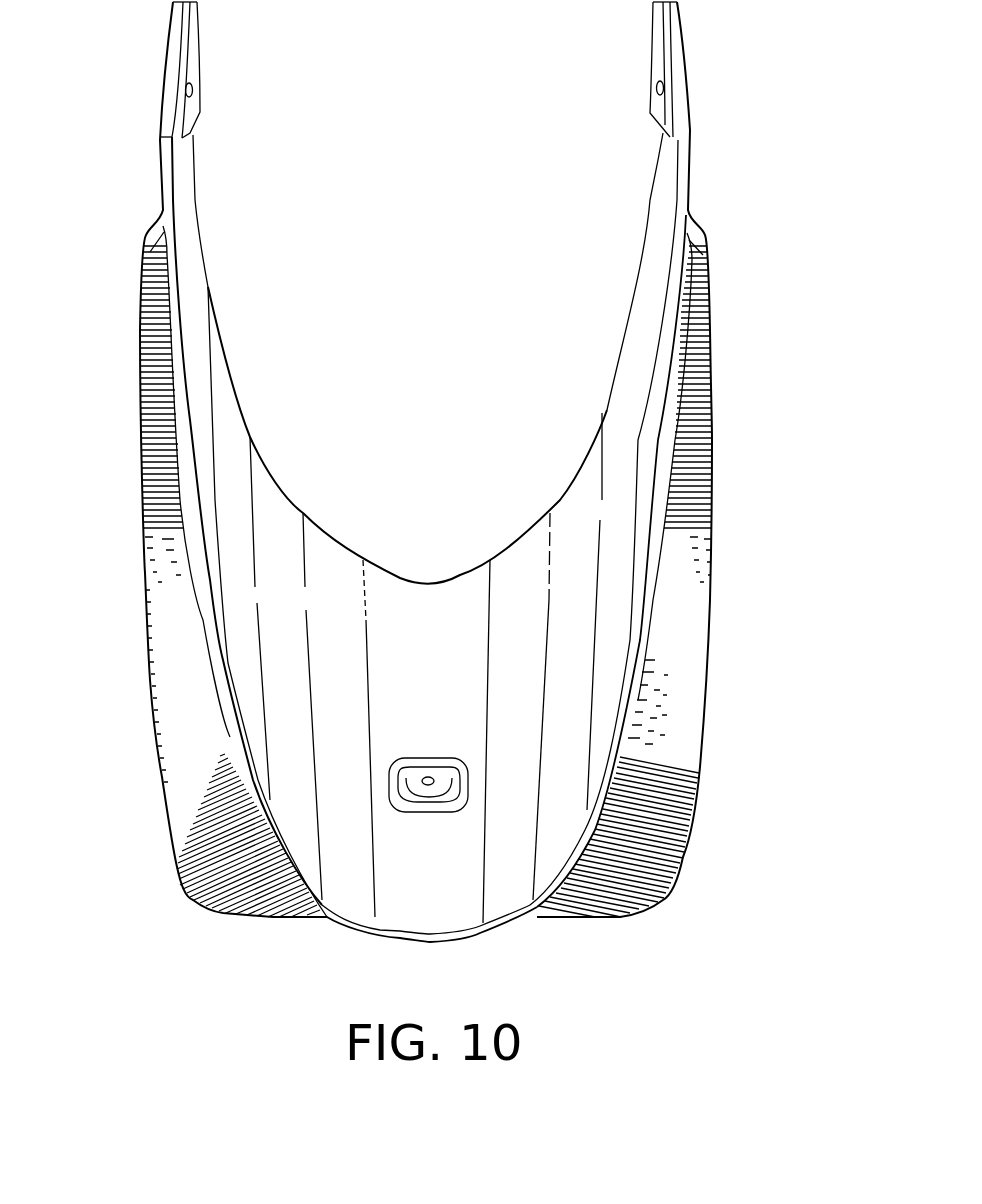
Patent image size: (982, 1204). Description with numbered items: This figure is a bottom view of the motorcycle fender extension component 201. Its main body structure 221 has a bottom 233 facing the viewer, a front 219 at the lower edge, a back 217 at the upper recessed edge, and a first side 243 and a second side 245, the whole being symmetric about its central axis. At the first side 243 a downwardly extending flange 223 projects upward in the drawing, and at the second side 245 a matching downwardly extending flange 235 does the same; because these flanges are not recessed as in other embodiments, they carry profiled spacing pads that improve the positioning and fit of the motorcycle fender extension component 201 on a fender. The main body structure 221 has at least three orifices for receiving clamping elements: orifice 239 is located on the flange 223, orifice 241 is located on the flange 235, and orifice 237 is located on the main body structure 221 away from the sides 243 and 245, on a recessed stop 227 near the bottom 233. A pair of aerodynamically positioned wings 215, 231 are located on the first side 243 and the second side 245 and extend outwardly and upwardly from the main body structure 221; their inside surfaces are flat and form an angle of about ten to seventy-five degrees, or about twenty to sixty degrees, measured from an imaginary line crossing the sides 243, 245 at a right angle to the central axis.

The motorcycle fender extension component 201 is at (762, 216).
The wing 215 is at (183, 703).
The back 217 is at (450, 580).
The front 219 is at (397, 938).
The main body structure 221 is at (275, 490).
The downwardly extending flange 223 is at (188, 110).
The recessed stop 227 is at (413, 773).
The wing 231 is at (687, 648).
The bottom 233 is at (452, 900).
The downwardly extending flange 235 is at (660, 113).
The orifice 237 is at (435, 787).
The orifice 239 is at (197, 90).
The orifice 241 is at (653, 90).
The first side 243 is at (183, 462).
The second side 245 is at (670, 453).